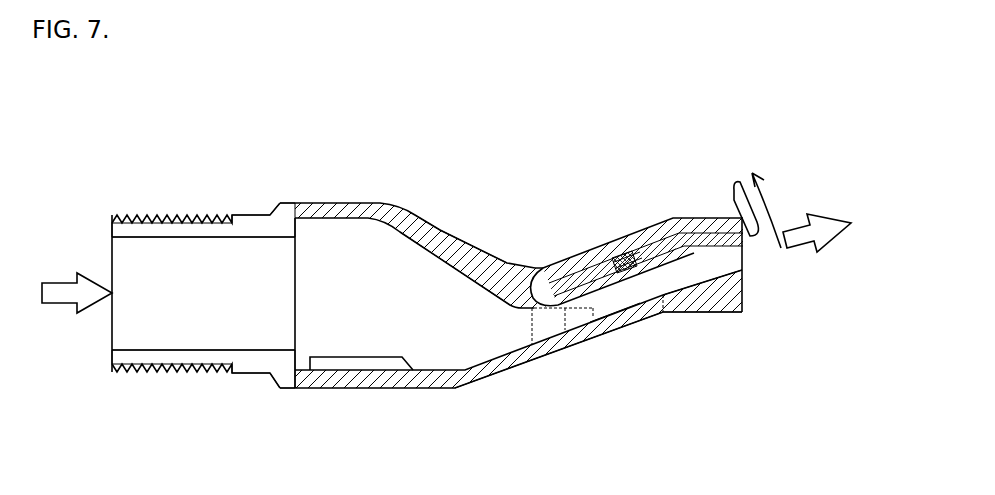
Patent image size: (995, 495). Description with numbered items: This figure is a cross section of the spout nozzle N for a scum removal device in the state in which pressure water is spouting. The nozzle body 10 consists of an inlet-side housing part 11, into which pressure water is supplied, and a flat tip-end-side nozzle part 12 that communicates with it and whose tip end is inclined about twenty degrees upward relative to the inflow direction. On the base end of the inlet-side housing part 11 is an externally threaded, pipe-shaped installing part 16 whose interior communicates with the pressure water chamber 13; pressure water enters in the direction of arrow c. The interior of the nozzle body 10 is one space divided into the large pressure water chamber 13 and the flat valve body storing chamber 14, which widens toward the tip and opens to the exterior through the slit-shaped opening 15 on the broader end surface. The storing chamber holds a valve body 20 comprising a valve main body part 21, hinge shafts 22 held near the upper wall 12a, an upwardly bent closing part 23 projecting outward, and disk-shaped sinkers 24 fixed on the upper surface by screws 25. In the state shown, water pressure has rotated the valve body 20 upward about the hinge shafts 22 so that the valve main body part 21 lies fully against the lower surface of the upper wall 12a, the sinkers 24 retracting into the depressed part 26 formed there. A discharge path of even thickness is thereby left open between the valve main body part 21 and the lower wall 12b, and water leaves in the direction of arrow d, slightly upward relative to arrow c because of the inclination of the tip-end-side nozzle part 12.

The nozzle body 10 is at (450, 392).
The inlet-side housing part 11 is at (417, 222).
The tip-end-side nozzle part 12 is at (579, 345).
The upper wall 12a is at (697, 217).
The lower wall 12b is at (611, 320).
The pressure water chamber 13 is at (369, 270).
The valve body storing chamber 14 is at (690, 272).
The opening 15 is at (745, 258).
The installing part 16 is at (186, 216).
The valve body 20 is at (664, 302).
The valve main body part 21 is at (583, 247).
The hinge shaft 22 is at (541, 335).
The closing part 23 is at (735, 182).
The sinker 24 is at (653, 242).
The screw 25 is at (619, 252).
The depressed part 26 is at (556, 262).
The spout nozzle N is at (526, 156).
The arrow c is at (62, 280).
The arrow d is at (818, 198).